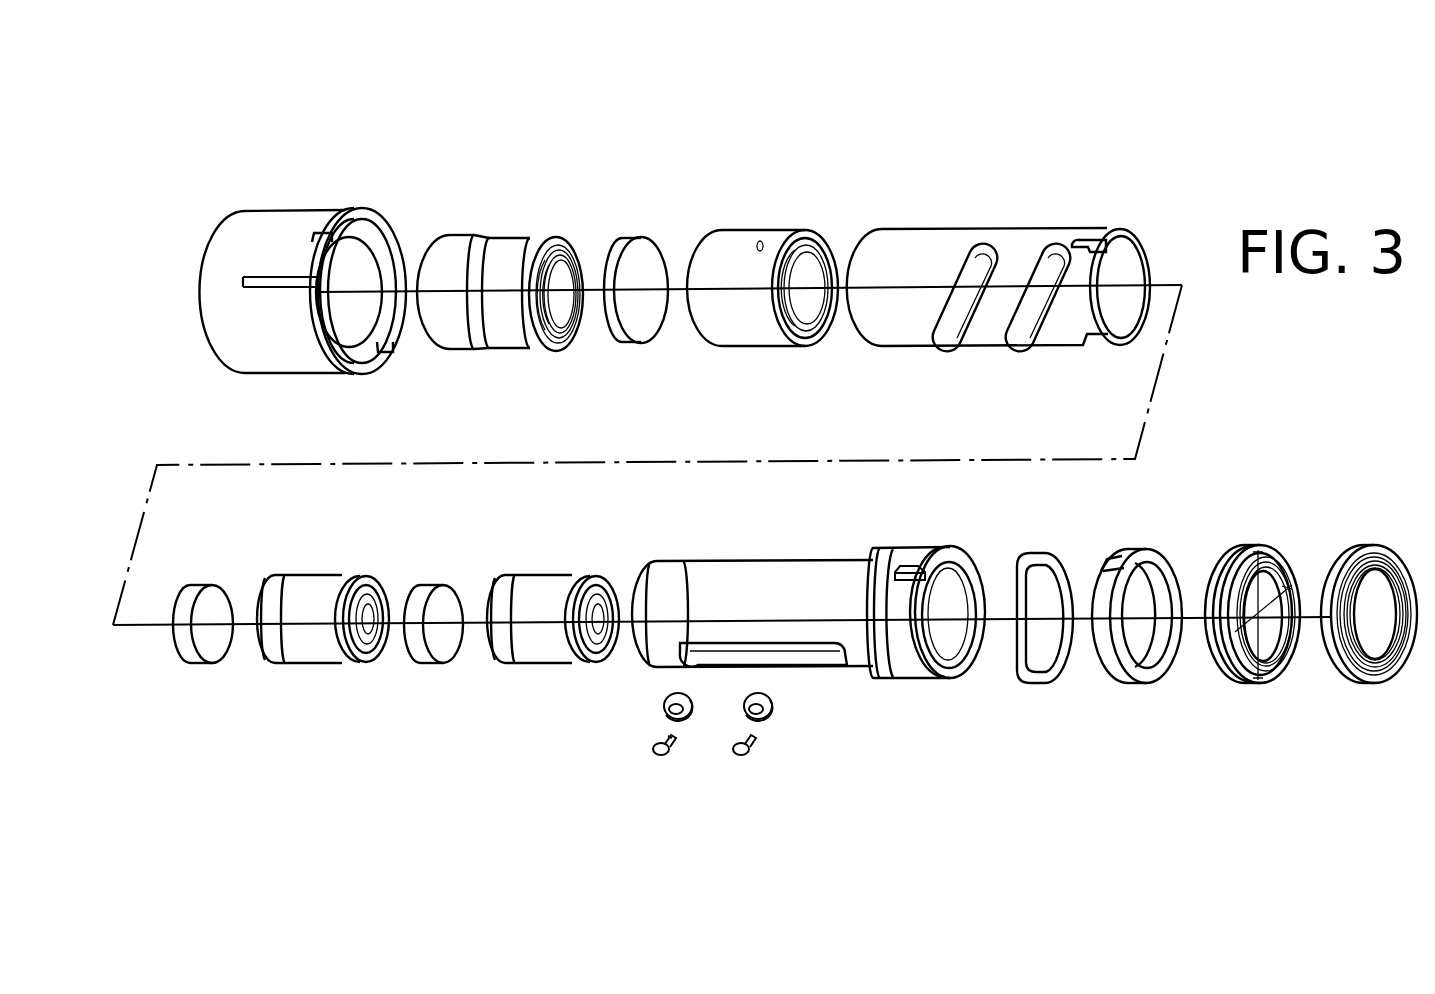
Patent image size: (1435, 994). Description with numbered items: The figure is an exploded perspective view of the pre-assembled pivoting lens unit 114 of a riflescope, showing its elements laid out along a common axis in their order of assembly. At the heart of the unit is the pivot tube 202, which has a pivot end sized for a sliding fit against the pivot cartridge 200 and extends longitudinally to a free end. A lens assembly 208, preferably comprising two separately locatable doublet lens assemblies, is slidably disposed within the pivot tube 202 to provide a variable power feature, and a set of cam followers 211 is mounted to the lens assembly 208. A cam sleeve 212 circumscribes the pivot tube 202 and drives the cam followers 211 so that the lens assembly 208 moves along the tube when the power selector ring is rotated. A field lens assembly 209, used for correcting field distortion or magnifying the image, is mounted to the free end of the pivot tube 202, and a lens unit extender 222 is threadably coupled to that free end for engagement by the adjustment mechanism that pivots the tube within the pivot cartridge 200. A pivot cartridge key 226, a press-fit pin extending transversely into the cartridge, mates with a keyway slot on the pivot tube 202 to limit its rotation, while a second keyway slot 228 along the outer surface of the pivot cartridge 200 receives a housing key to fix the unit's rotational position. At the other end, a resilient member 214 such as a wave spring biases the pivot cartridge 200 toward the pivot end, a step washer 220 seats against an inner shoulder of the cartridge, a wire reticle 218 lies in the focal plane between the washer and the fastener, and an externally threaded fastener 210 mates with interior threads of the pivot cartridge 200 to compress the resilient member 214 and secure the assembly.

The pre-assembled pivoting lens unit 114 is at (1080, 162).
The pivot cartridge 200 is at (316, 212).
The second keyway slot 228 is at (272, 278).
The lens unit extender 222 is at (483, 237).
The field lens assembly 209 is at (817, 228).
The cam sleeve 212 is at (993, 228).
The lens assembly 208 is at (170, 667).
The pivot tube 202 is at (692, 562).
The pivot cartridge key 226 is at (907, 566).
The cam followers 211 is at (700, 647).
The resilient member 214 is at (1033, 683).
The step washer 220 is at (1133, 683).
The wire reticle 218 is at (1243, 687).
The fastener 210 is at (1363, 683).